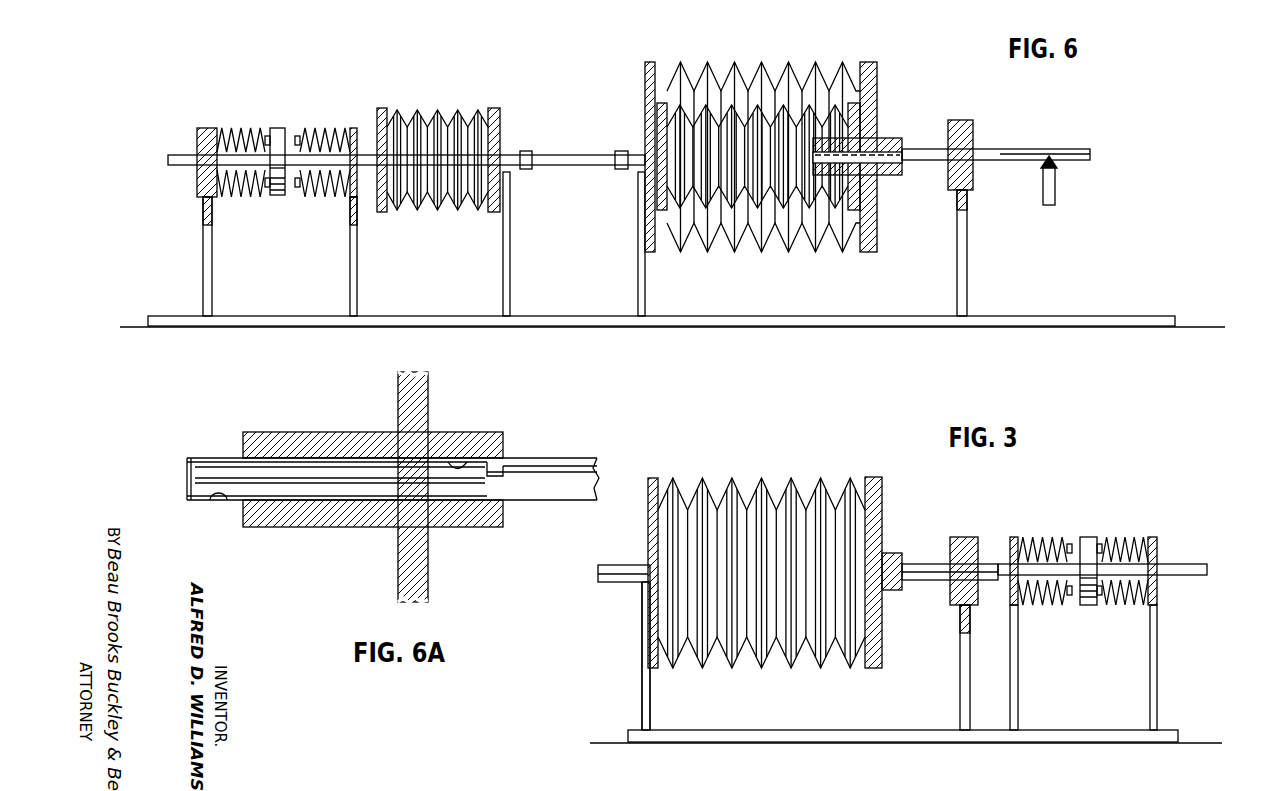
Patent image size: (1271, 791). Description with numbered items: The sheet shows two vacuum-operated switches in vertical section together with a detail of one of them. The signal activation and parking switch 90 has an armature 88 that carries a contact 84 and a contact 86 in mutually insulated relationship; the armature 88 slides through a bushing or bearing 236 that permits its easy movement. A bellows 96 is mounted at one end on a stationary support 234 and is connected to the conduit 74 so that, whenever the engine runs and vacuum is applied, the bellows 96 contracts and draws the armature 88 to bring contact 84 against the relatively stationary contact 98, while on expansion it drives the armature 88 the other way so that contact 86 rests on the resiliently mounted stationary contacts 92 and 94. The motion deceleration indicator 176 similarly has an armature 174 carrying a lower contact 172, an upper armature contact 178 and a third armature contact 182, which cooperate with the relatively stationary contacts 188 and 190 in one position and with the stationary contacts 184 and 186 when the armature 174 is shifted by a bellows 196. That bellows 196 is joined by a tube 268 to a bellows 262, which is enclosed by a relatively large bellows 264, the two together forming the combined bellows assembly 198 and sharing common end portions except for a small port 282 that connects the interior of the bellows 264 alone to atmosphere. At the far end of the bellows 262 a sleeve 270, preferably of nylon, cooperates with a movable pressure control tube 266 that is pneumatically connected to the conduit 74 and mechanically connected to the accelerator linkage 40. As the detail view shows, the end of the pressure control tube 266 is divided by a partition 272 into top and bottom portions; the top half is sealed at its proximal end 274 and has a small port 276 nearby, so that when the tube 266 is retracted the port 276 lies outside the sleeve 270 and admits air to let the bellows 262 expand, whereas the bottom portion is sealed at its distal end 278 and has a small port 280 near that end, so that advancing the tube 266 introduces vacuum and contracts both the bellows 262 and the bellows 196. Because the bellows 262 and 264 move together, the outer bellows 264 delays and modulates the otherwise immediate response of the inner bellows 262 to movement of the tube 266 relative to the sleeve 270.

In FIG. 6, the accelerator linkage 40 is at (1078, 149).
In FIG. 6, the conduit 74 is at (1056, 182).
In FIG. 3, the conduit 74 is at (625, 565).
In FIG. 3, the contact 84 is at (1085, 537).
In FIG. 3, the contact 86 is at (1092, 605).
In FIG. 3, the armature 88 is at (928, 564).
In FIG. 3, the signal activation and parking switch 90 is at (884, 710).
In FIG. 3, the contact 92 is at (1103, 537).
In FIG. 3, the contact 94 is at (1103, 600).
In FIG. 3, the bellows 96 is at (752, 478).
In FIG. 3, the stationary contact 98 is at (1070, 600).
In FIG. 6, the lower contact 172 is at (277, 195).
In FIG. 6, the armature 174 is at (168, 159).
In FIG. 6, the motion deceleration indicator 176 is at (558, 242).
In FIG. 6, the upper armature contact 178 is at (272, 128).
In FIG. 6, the third armature contact 182 is at (297, 136).
In FIG. 6, the stationary contact 184 is at (303, 132).
In FIG. 6, the stationary contact 186 is at (297, 190).
In FIG. 6, the stationary contact 188 is at (266, 132).
In FIG. 6, the stationary contact 190 is at (267, 190).
In FIG. 6, the bellows 196 is at (440, 110).
In FIG. 6, the combined bellows assembly 198 is at (786, 179).
In FIG. 3, the stationary support 234 is at (642, 703).
In FIG. 3, the bushing or bearing 236 is at (975, 545).
In FIG. 6, the bellows 262 is at (753, 232).
In FIG. 6, the bellows 264 is at (833, 240).
In FIG. 6, the pressure control tube 266 is at (1020, 149).
In FIG. 6A, the pressure control tube 266 is at (571, 488).
In FIG. 6, the tube 268 is at (524, 151).
In FIG. 6, the sleeve 270 is at (886, 172).
In FIG. 6A, the sleeve 270 is at (463, 515).
In FIG. 6A, the partition 272 is at (365, 482).
In FIG. 6A, the proximal end 274 is at (500, 466).
In FIG. 6A, the port 276 is at (455, 462).
In FIG. 6A, the distal end 278 is at (190, 486).
In FIG. 6A, the port 280 is at (217, 502).
In FIG. 6, the port 282 is at (879, 96).